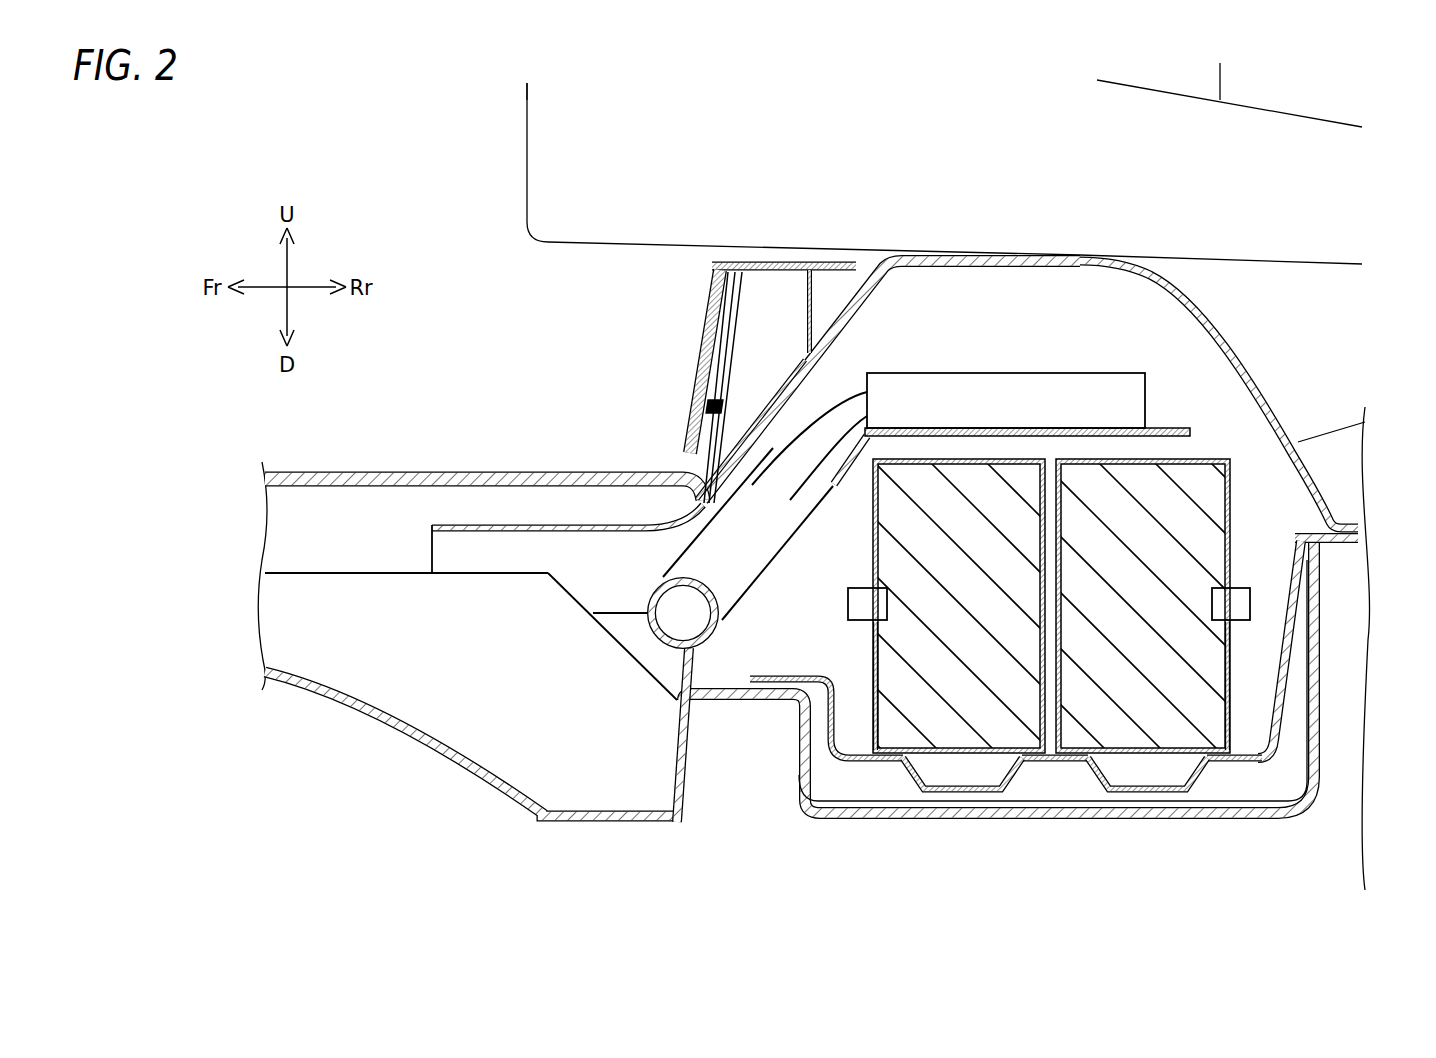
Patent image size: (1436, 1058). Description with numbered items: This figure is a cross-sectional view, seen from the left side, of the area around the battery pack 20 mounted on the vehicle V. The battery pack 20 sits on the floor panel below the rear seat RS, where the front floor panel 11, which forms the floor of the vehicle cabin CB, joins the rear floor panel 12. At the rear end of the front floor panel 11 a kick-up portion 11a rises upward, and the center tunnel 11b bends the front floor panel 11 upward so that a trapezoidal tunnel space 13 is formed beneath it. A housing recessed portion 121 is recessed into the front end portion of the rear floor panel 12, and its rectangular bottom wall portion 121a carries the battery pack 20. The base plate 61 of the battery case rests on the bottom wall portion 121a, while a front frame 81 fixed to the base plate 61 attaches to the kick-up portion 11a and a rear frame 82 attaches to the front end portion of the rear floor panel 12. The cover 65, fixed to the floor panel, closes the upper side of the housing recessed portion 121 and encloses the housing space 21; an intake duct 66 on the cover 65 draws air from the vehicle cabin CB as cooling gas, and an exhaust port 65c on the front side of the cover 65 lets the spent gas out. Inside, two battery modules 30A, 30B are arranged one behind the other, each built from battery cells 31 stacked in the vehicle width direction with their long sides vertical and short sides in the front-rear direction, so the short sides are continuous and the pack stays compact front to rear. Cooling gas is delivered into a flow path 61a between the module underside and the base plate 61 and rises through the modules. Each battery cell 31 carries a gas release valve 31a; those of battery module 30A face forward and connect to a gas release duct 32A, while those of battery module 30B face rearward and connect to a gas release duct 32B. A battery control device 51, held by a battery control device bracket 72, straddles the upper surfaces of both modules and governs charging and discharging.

The front floor panel 11 is at (290, 568).
The kick-up portion 11a is at (682, 775).
The center tunnel 11b is at (320, 573).
The rear floor panel 12 is at (1345, 478).
The tunnel space 13 is at (337, 745).
The battery pack 20 is at (570, 328).
The housing space 21 is at (1243, 410).
The battery module 30A is at (920, 688).
The battery module 30B is at (1193, 720).
The battery cell 31 is at (1003, 513).
The gas release valve 31a is at (878, 625).
The gas release duct 32A is at (867, 590).
The gas release duct 32B is at (1240, 588).
The battery control device 51 is at (1108, 400).
The base plate 61 is at (912, 810).
The flow path 61a is at (960, 770).
The cover 65 is at (1193, 296).
The exhaust port 65c is at (432, 548).
The intake duct 66 is at (812, 300).
The battery control device bracket 72 is at (1163, 426).
The front frame 81 is at (808, 712).
The rear frame 82 is at (1290, 665).
The housing recessed portion 121 is at (1272, 772).
The bottom wall portion 121a is at (1052, 802).
The vehicle V is at (408, 185).
The rear seat RS is at (565, 152).
The vehicle cabin CB is at (455, 375).